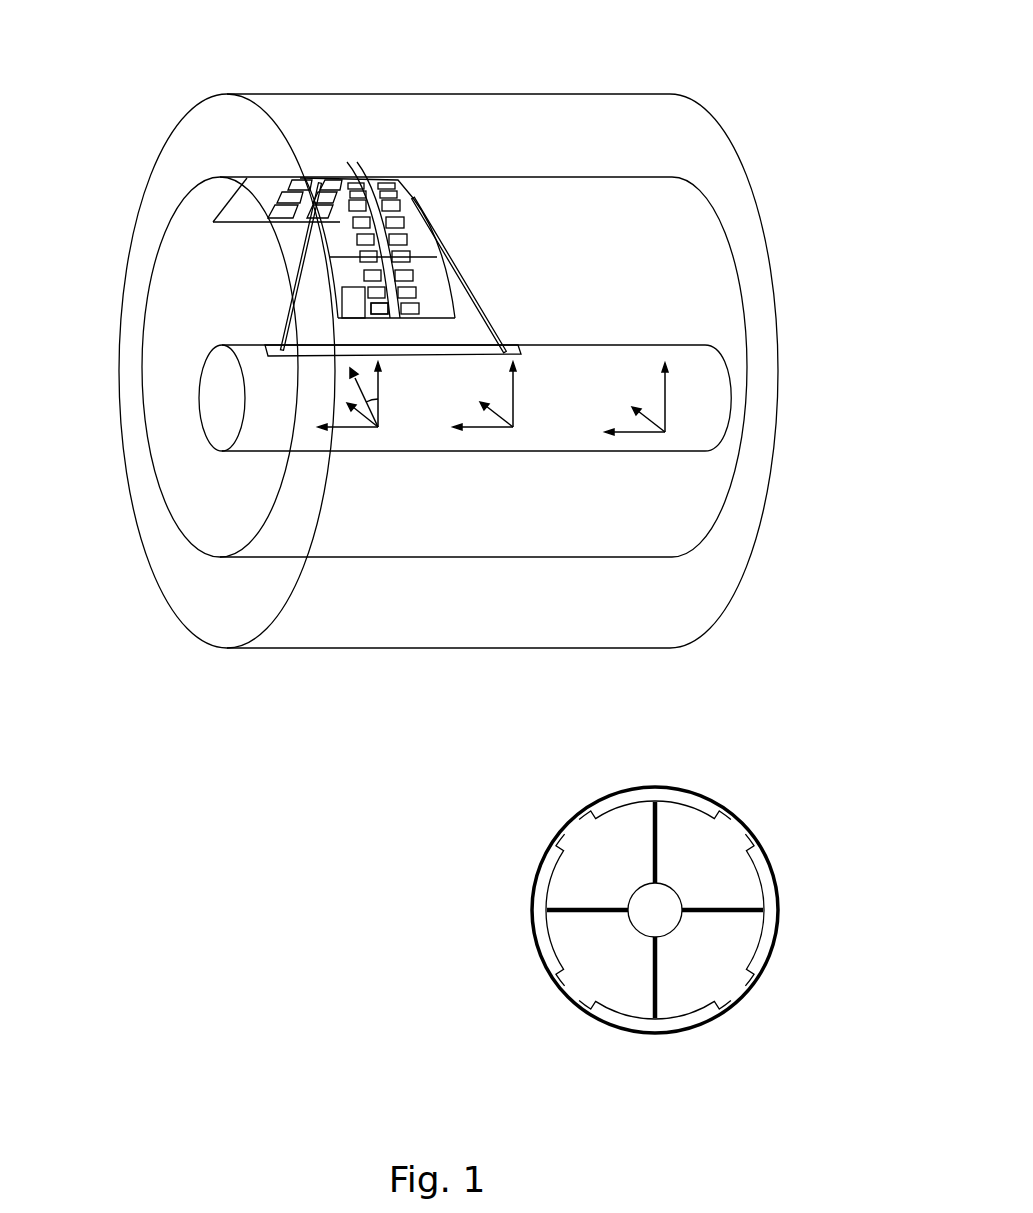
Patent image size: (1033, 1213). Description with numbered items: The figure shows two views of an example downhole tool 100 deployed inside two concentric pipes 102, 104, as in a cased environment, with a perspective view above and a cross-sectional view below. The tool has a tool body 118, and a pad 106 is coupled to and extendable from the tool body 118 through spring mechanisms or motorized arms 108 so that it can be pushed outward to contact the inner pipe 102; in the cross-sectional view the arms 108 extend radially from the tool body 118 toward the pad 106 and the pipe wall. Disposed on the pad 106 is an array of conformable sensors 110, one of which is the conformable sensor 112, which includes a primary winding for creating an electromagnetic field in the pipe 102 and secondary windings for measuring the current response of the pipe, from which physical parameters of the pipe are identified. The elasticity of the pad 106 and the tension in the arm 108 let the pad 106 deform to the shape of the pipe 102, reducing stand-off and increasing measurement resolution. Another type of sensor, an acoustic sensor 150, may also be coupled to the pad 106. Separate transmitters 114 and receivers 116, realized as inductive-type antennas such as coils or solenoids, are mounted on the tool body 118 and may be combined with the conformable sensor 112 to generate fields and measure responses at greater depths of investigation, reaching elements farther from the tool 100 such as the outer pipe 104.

The downhole tool 100 is at (444, 561).
The pipe 102 is at (143, 293).
The pipe 104 is at (760, 217).
The pad 106 is at (338, 176).
The arms 108 is at (657, 987).
The array of conformable sensors 110 is at (410, 194).
The conformable sensor 112 is at (390, 307).
The transmitter 114 is at (474, 441).
The receiver 116 is at (628, 442).
The tool body 118 is at (198, 407).
The acoustic sensor 150 is at (291, 320).